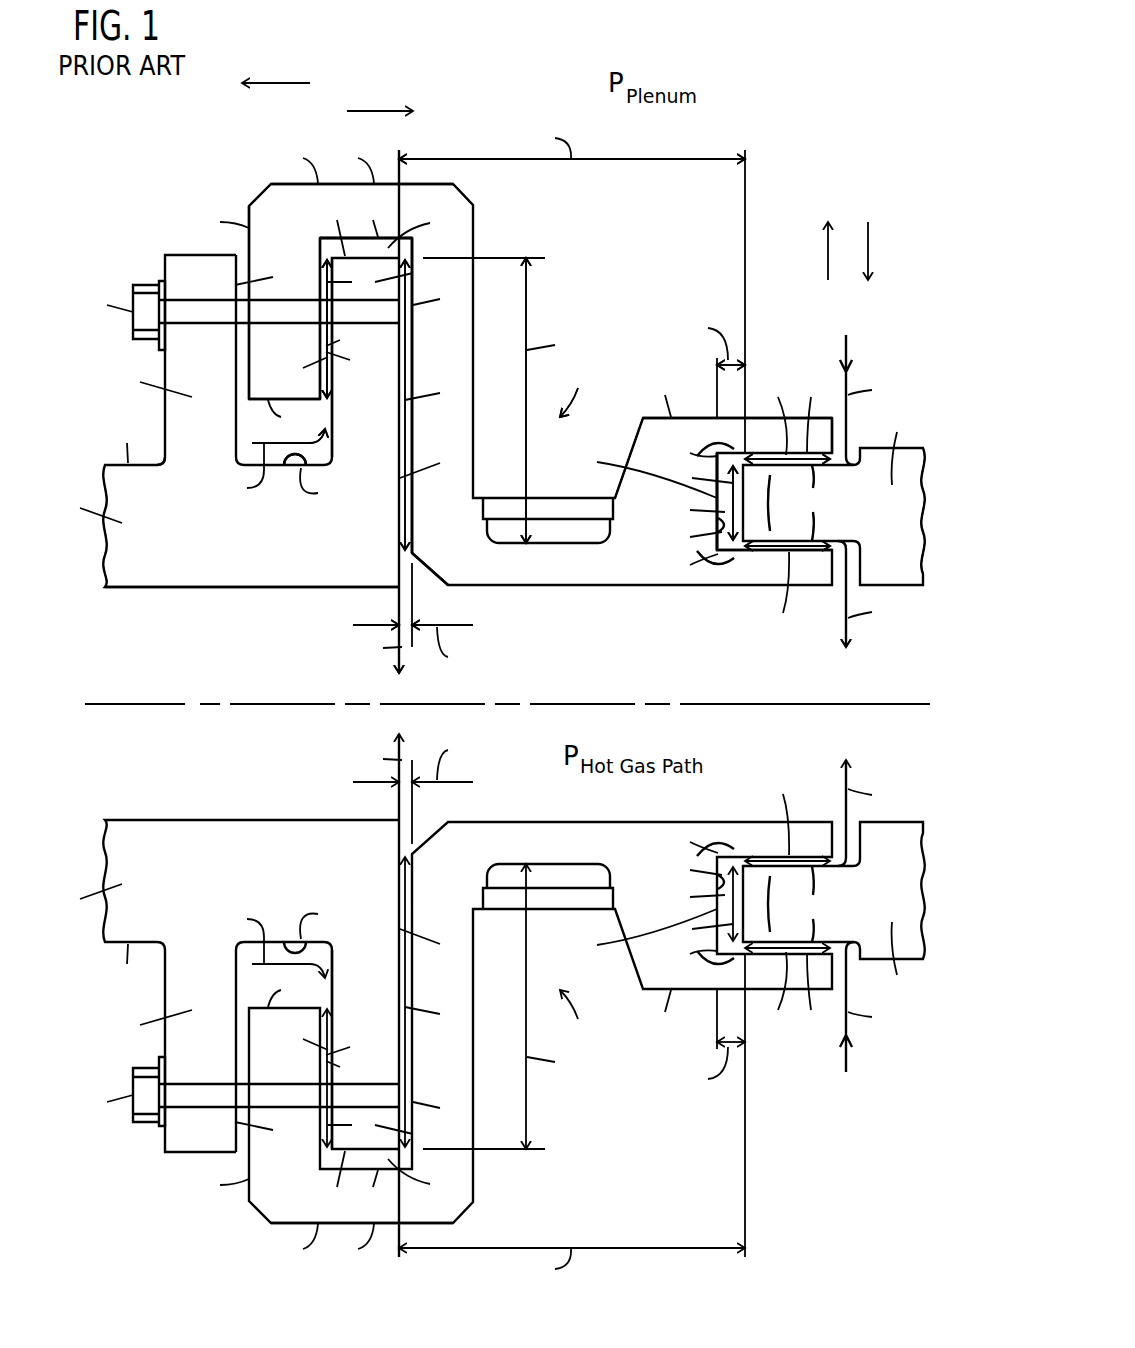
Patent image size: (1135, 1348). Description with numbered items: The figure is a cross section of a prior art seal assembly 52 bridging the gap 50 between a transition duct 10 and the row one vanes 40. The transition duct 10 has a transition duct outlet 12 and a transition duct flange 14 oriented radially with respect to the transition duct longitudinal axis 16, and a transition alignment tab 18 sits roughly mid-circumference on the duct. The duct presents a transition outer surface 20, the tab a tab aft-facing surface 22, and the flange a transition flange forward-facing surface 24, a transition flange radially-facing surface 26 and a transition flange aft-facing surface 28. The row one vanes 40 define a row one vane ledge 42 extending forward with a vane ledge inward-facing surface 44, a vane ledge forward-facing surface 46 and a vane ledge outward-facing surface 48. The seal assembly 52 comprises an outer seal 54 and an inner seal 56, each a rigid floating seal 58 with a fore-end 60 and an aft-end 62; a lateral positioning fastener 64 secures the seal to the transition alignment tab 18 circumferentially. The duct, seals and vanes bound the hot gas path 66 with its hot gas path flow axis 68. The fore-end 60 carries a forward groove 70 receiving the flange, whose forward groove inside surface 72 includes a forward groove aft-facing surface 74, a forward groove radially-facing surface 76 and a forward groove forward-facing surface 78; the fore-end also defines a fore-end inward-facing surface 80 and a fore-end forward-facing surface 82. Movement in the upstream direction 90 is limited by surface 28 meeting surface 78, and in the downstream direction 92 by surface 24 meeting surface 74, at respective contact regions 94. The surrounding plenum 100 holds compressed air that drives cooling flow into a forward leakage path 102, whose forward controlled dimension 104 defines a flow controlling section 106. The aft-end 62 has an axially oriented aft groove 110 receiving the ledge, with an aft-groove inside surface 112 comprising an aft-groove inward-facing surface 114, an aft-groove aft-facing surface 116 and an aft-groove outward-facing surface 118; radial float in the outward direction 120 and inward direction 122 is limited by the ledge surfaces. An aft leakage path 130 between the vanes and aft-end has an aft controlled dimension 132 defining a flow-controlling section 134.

The transition duct 10 is at (122, 523).
The transition duct outlet 12 is at (430, 590).
The transition duct flange 14 is at (378, 432).
The transition duct longitudinal axis 16 is at (262, 705).
The transition alignment tab 18 is at (192, 397).
The transition outer surface 20 is at (301, 468).
The tab aft-facing surface 22 is at (235, 285).
The transition flange forward-facing surface 24 is at (328, 357).
The transition flange radially-facing surface 26 is at (345, 256).
The transition flange aft-facing surface 28 is at (400, 478).
The row one vanes 40 is at (892, 485).
The row one vane ledge 42 is at (834, 516).
The vane ledge inward-facing surface 44 is at (789, 552).
The vane ledge forward-facing surface 46 is at (733, 483).
The vane ledge outward-facing surface 48 is at (786, 455).
The gap 50 is at (571, 158).
The seal assembly 52 is at (583, 704).
The outer seal 54 is at (374, 183).
The inner seal 56 is at (480, 1135).
The floating seal 58 is at (671, 417).
The fore-end 60 is at (318, 183).
The aft-end 62 is at (807, 452).
The lateral positioning fastener 64 is at (133, 312).
The hot gas path 66 is at (620, 690).
The hot gas path flow axis 68 is at (713, 705).
The forward groove 70 is at (388, 248).
The forward groove inside surface 72 is at (413, 273).
The forward groove aft-facing surface 74 is at (326, 352).
The forward groove radially-facing surface 76 is at (378, 237).
The forward groove forward-facing surface 78 is at (413, 305).
The fore-end inward-facing surface 80 is at (268, 400).
The fore-end forward-facing surface 82 is at (249, 228).
The upstream direction 90 is at (289, 84).
The downstream direction 92 is at (363, 112).
The contact regions 94 is at (405, 400).
The plenum 100 is at (590, 100).
The forward leakage path 102 is at (402, 647).
The forward controlled dimension 104 is at (437, 627).
The flow controlling section 106 is at (527, 350).
The aft groove 110 is at (725, 512).
The aft-groove inside surface 112 is at (718, 554).
The aft-groove inward-facing surface 114 is at (787, 695).
The aft-groove aft-facing surface 116 is at (722, 532).
The aft-groove outward-facing surface 118 is at (787, 704).
The outward direction 120 is at (824, 268).
The inward direction 122 is at (866, 235).
The aft leakage path 130 is at (848, 618).
The aft controlled dimension 132 is at (728, 360).
The flow-controlling section 134 is at (717, 498).